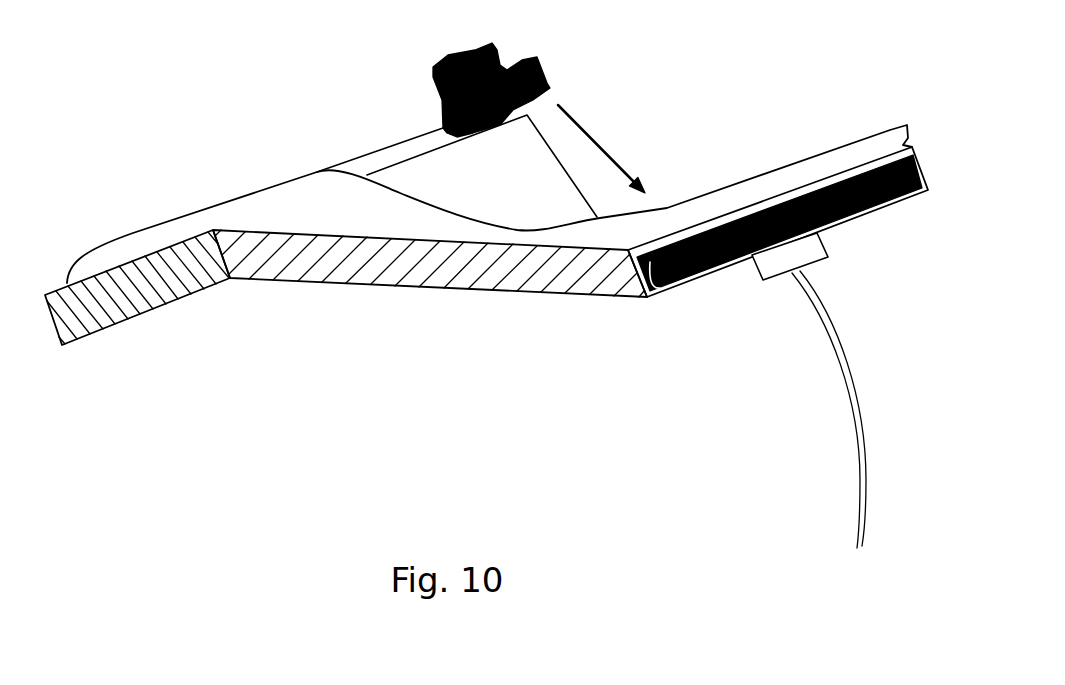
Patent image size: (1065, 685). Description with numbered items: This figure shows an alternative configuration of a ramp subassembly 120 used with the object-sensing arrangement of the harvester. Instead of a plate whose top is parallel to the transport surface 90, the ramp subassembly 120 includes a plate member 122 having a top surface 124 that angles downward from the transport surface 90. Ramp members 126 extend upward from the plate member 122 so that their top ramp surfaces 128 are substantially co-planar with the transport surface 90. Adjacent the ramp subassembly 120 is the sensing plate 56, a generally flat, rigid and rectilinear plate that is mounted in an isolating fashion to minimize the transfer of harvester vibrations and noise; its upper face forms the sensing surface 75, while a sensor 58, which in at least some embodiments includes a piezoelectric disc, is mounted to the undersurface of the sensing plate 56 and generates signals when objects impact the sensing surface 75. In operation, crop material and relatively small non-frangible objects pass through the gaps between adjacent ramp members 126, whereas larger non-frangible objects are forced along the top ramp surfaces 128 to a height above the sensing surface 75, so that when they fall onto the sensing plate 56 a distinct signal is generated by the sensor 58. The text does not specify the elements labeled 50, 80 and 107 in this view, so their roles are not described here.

The base wall 50 is at (193, 294).
The sensing plate 56 is at (630, 296).
The sensor 58 is at (755, 273).
The sensing surface 75 is at (753, 205).
The adhesive plug 80 is at (540, 62).
The transport surface 90 is at (148, 248).
The flange portion 107 is at (137, 287).
The ramp subassembly 120 is at (315, 332).
The plate member 122 is at (400, 287).
The top surface 124 is at (293, 231).
The ramp members 126 is at (440, 187).
The top ramp surfaces 128 is at (378, 165).